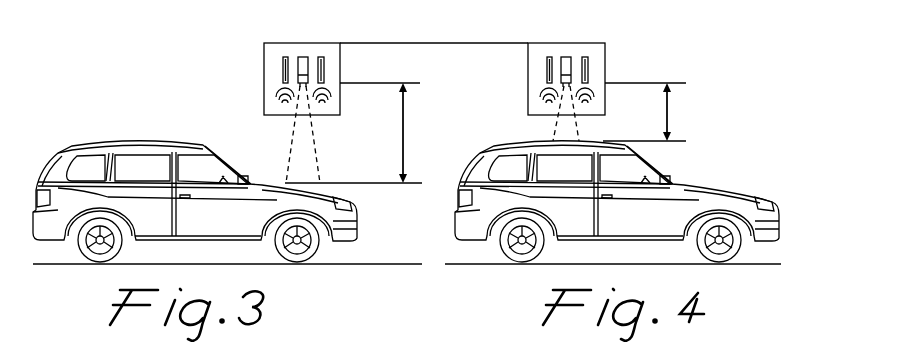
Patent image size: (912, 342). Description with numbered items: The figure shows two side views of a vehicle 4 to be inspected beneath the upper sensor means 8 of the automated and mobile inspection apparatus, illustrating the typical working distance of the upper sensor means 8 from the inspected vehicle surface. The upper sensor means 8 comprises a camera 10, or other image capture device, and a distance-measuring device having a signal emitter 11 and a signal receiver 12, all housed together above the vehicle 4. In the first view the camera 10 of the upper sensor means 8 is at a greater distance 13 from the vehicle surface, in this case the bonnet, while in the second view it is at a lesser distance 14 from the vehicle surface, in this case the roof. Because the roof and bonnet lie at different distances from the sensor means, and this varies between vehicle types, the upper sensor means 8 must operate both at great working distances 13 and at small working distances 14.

In FIG. 3, the vehicle 4 is at (80, 146).
In FIG. 4, the vehicle 4 is at (743, 180).
In FIG. 3, the upper sensor means 8 is at (322, 43).
In FIG. 4, the upper sensor means 8 is at (548, 43).
In FIG. 3, the camera 10 is at (303, 57).
In FIG. 4, the camera 10 is at (567, 57).
In FIG. 3, the signal emitter 11 is at (325, 68).
In FIG. 4, the signal emitter 11 is at (588, 66).
In FIG. 3, the signal receiver 12 is at (283, 70).
In FIG. 4, the signal receiver 12 is at (548, 68).
In FIG. 3, the greater distance 13 is at (403, 135).
In FIG. 4, the lesser distance 14 is at (667, 115).